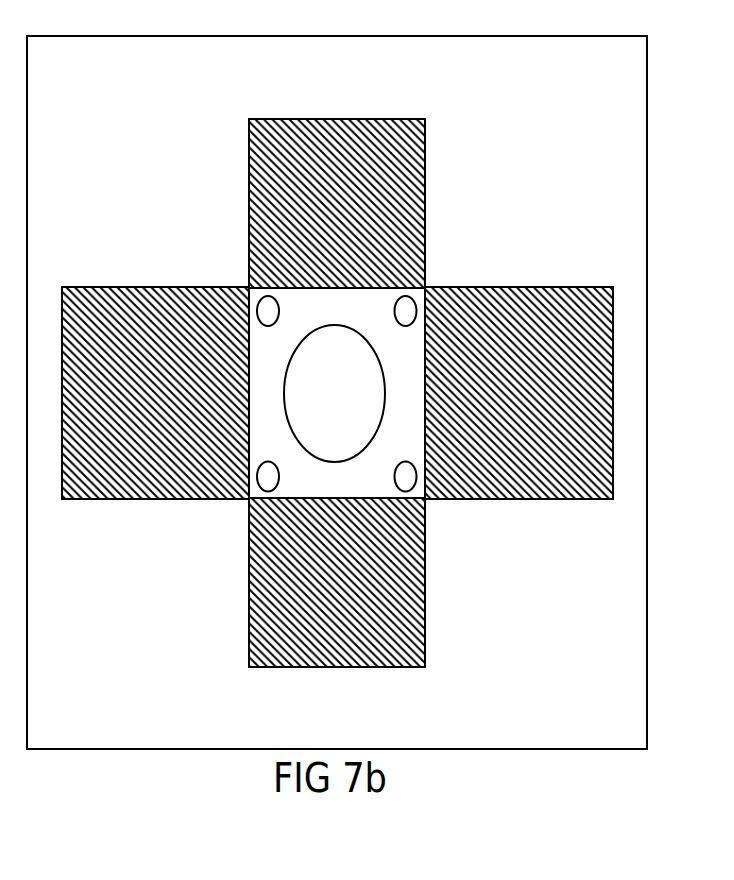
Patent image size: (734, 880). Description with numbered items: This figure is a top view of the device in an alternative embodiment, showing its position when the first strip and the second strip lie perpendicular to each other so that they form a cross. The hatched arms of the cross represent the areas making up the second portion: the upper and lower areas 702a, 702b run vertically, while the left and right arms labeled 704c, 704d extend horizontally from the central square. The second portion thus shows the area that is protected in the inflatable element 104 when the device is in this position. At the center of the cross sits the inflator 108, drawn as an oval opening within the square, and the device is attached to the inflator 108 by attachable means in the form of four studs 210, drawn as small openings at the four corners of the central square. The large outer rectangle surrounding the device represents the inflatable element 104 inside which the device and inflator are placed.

The inflatable element 104 is at (647, 689).
The inflator 108 is at (322, 317).
The studs 210 is at (290, 465).
The area 702a is at (427, 223).
The area 702b is at (427, 598).
The left conductive arm 704c is at (156, 285).
The right conductive arm 704d is at (553, 265).